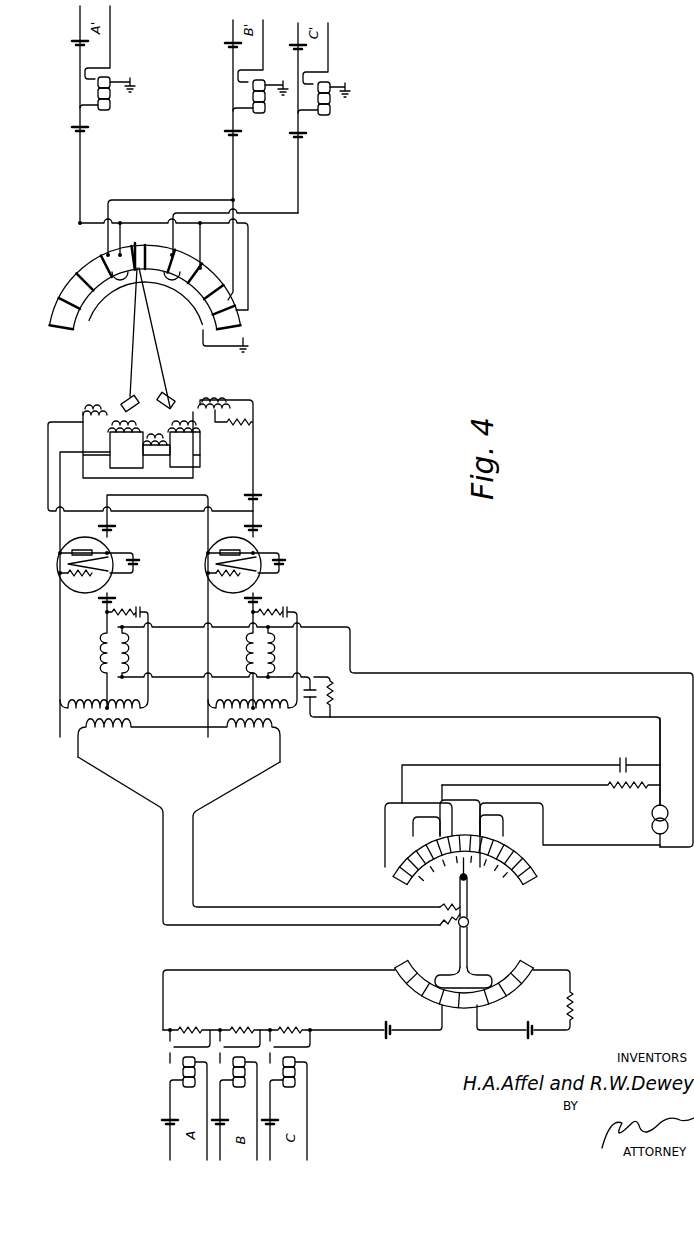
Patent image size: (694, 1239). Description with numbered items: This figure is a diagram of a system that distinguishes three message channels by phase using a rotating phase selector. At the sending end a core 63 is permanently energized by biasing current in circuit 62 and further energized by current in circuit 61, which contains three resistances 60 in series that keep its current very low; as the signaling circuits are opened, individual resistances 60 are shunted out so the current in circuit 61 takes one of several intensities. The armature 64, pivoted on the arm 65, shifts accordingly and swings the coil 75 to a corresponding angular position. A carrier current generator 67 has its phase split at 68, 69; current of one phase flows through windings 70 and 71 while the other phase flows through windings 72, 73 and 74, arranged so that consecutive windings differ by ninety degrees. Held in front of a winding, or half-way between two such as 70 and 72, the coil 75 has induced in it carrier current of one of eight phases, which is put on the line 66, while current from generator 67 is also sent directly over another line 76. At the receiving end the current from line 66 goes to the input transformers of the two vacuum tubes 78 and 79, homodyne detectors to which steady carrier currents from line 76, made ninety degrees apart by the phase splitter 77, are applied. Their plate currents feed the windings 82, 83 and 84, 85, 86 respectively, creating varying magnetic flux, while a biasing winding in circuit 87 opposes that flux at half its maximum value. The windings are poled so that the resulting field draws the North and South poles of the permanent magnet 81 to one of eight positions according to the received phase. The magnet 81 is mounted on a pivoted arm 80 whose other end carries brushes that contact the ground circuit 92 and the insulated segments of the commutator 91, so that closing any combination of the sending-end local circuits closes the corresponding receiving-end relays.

The resistances 60 is at (186, 1025).
The circuit 61 is at (160, 998).
The biasing circuit 62 is at (566, 972).
The core 63 is at (463, 1008).
The armature 64 is at (455, 968).
The arm 65 is at (471, 958).
The line 66 is at (170, 795).
The carrier current generator 67 is at (650, 782).
The phase splitter element 68 is at (613, 790).
The phase splitter element 69 is at (623, 757).
The winding 70 is at (426, 827).
The winding 71 is at (498, 826).
The winding 72 is at (461, 844).
The winding 73 is at (460, 836).
The winding 74 is at (541, 858).
The coil 75 is at (470, 882).
The line 76 is at (480, 717).
The phase splitter 77 is at (318, 712).
The vacuum tube 78 is at (57, 565).
The vacuum tube 79 is at (205, 565).
The pivoted arm 80 is at (150, 337).
The permanent magnet 81 is at (160, 395).
The winding 82 is at (122, 422).
The winding 83 is at (184, 420).
The winding 84 is at (93, 410).
The winding 85 is at (155, 432).
The winding 86 is at (205, 402).
The biasing winding circuit 87 is at (139, 466).
The commutator 91 is at (148, 297).
The ground circuit 92 is at (114, 306).